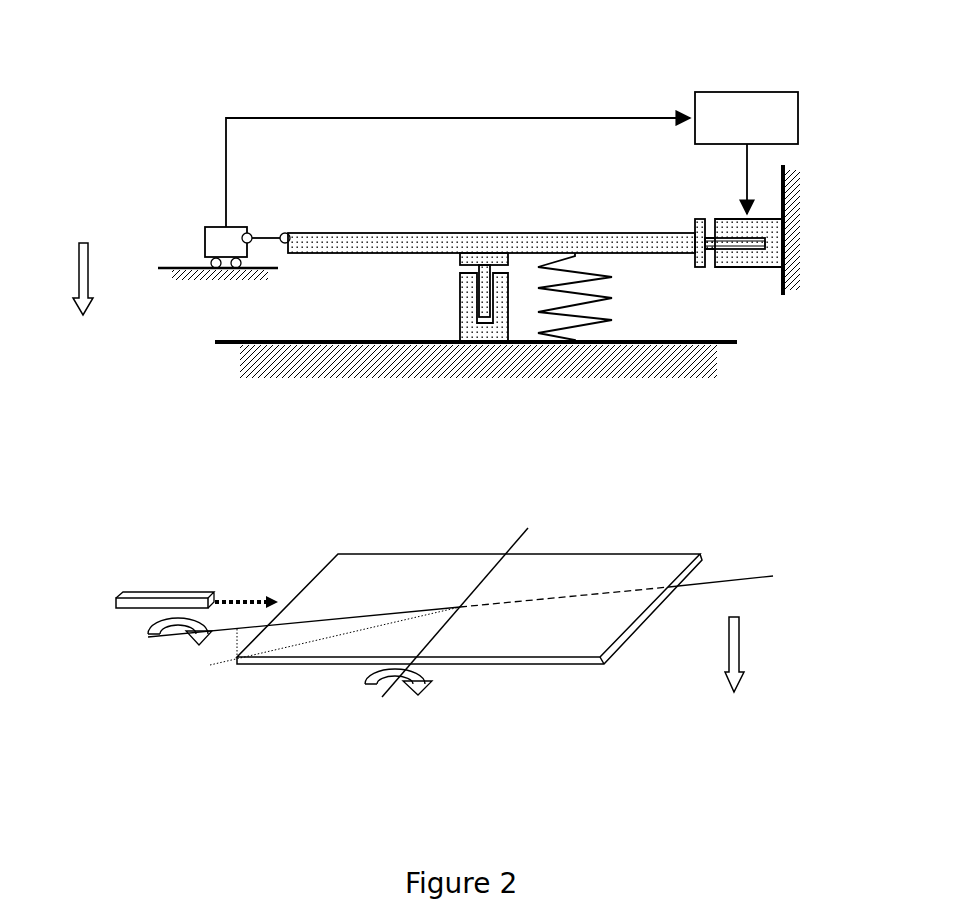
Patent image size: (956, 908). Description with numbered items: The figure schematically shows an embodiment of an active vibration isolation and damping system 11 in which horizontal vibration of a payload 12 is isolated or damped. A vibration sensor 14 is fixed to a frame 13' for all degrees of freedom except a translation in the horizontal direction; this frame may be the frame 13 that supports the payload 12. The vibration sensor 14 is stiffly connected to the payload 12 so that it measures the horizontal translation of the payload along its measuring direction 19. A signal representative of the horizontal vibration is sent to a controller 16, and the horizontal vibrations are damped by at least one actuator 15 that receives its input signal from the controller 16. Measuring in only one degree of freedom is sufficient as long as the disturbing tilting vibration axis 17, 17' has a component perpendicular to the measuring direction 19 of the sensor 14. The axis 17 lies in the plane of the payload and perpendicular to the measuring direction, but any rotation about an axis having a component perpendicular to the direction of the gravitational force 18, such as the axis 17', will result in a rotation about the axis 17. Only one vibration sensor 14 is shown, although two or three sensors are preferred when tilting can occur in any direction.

The mirror system 11 is at (165, 42).
The mirror beam / plate 12 is at (494, 232).
The frame supporting the payload 13 is at (457, 373).
The frame 13' is at (207, 306).
The vibration sensor 14 is at (226, 224).
The actuator 15 is at (709, 270).
The controller 16 is at (747, 88).
The tilting vibration axis 17 is at (446, 609).
The tilting vibration axis 17' is at (442, 623).
The gravitational force direction 18 is at (415, 467).
The measuring direction 19 is at (246, 589).